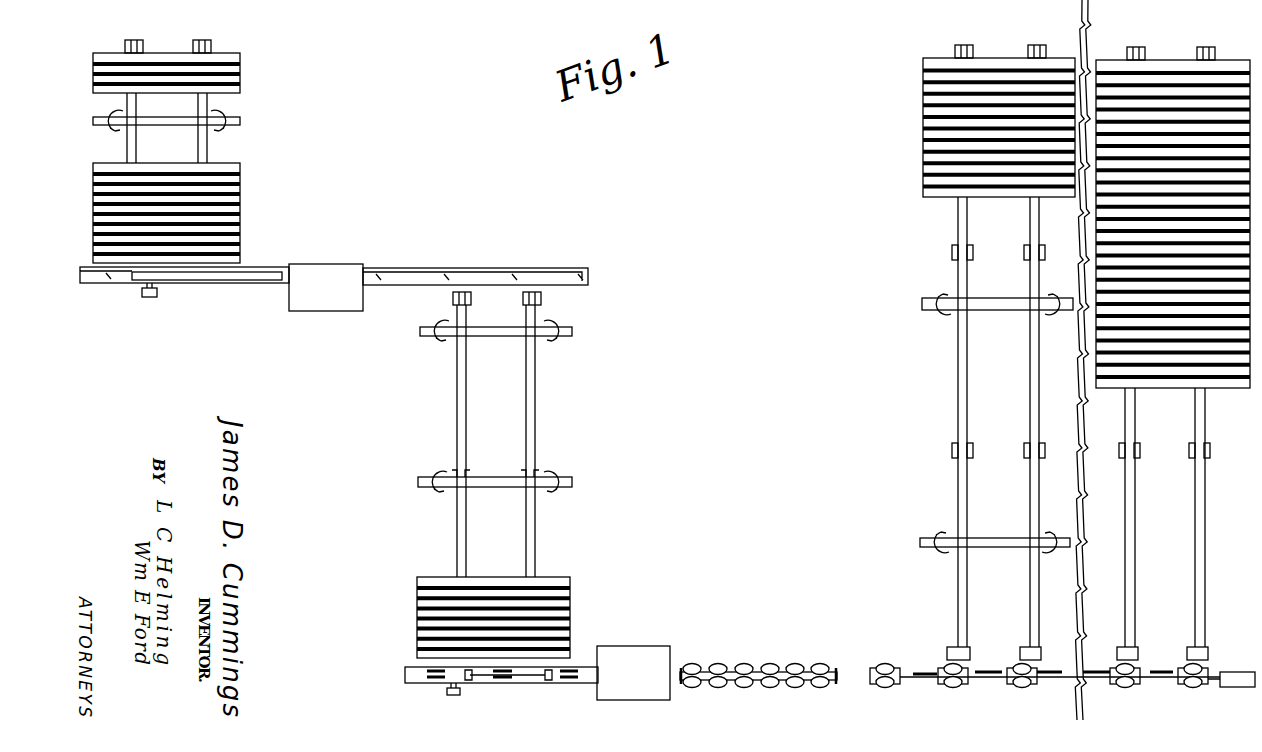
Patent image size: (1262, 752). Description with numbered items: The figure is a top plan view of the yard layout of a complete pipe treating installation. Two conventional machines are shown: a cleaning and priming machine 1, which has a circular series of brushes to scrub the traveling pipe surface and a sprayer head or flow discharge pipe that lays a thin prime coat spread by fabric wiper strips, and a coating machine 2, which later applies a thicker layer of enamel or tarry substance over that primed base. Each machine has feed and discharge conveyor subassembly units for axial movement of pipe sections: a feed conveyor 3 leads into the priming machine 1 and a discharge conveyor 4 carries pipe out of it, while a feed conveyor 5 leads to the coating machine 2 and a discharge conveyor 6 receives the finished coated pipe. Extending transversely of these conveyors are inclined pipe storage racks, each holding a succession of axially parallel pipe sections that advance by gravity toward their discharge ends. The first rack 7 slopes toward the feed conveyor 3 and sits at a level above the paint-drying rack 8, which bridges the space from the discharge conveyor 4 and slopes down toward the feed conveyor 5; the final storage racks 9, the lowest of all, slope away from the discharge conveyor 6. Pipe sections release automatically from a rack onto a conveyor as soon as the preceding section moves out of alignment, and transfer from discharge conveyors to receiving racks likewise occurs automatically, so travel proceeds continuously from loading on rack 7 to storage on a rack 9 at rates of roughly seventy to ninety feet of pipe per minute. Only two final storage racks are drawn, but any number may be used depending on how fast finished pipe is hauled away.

The cleaning and priming machine 1 is at (322, 265).
The coating machine 2 is at (636, 648).
The feed conveyor 3 is at (259, 267).
The discharge conveyor 4 is at (418, 268).
The feed conveyor 5 is at (573, 687).
The discharge conveyor 6 is at (782, 665).
The first storage rack 7 is at (207, 146).
The paint-drying rack 8 is at (538, 377).
The final storage rack 9 is at (957, 393).